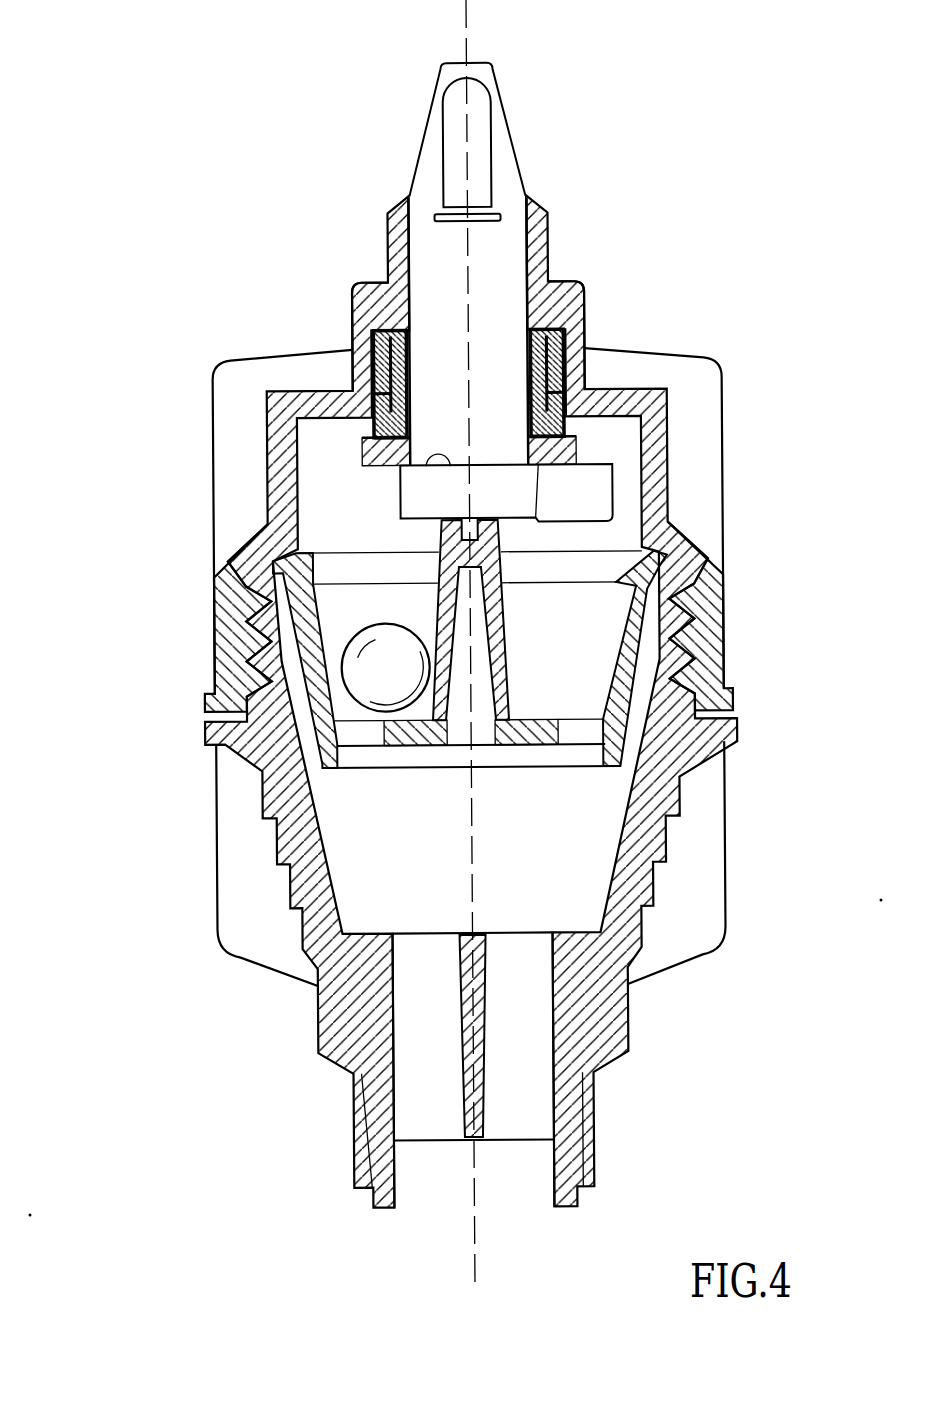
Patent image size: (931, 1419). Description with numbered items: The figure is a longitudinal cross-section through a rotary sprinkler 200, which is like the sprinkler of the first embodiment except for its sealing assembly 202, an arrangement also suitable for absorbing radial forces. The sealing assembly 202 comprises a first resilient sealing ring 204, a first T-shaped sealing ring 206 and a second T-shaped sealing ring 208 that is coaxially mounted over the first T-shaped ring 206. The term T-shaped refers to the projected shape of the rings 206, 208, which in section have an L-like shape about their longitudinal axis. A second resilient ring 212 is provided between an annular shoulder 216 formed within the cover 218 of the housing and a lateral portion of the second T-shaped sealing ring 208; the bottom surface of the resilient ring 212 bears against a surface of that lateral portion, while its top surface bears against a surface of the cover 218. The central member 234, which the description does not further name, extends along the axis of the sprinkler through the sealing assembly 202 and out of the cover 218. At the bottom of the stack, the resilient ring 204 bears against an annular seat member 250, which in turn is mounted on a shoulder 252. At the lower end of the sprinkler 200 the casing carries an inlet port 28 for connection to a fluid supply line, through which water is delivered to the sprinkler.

The sprinkler 200 is at (160, 983).
The sealing assembly 202 is at (580, 373).
The first resilient sealing ring 204 is at (363, 438).
The first T-shaped sealing ring 206 is at (363, 422).
The second T-shaped sealing ring 208 is at (360, 397).
The second resilient ring 212 is at (325, 352).
The annular shoulder 216 is at (560, 390).
The cover 218 is at (698, 400).
The plunger 234 is at (432, 263).
The annular seat member 250 is at (400, 468).
The shoulder 252 is at (435, 470).
The inlet port 28 is at (503, 1210).